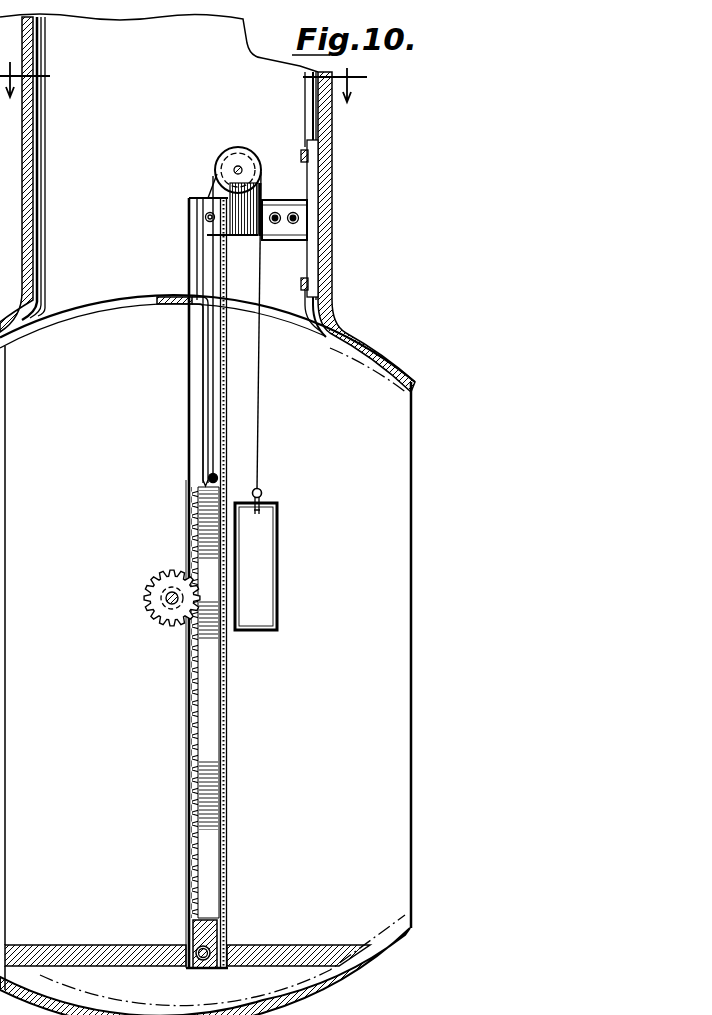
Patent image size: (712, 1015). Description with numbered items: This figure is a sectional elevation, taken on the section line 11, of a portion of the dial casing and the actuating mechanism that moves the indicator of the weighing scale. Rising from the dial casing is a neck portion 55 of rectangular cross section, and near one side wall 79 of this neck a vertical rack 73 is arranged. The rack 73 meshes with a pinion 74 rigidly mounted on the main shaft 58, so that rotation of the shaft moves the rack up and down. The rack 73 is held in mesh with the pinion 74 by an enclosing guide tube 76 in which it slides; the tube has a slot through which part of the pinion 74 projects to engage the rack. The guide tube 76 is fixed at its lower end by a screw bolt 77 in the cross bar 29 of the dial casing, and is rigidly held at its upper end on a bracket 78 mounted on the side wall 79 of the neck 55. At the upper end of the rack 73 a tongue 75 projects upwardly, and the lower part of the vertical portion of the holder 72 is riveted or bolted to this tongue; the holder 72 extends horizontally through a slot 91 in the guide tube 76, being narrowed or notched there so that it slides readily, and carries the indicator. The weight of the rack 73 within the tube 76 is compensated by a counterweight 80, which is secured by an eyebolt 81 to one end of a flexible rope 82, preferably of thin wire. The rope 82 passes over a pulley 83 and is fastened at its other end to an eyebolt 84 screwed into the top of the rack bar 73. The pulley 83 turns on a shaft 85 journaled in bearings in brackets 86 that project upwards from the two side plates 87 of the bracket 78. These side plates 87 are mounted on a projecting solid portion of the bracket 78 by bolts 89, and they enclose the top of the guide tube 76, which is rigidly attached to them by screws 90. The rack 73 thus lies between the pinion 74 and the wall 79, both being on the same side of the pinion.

The section line 11 is at (195, 82).
The cross bar 29 is at (115, 945).
The neck portion 55 is at (306, 113).
The main shaft 58 is at (167, 592).
The holder 72 is at (173, 294).
The rack 73 is at (211, 690).
The pinion 74 is at (169, 606).
The tongue 75 is at (200, 457).
The guide tube 76 is at (225, 754).
The screw bolt 77 is at (206, 951).
The bracket 78 is at (297, 214).
The side wall 79 is at (332, 270).
The counterweight 80 is at (257, 554).
The eyebolt 81 is at (263, 494).
The flexible rope 82 is at (259, 440).
The pulley 83 is at (216, 160).
The eyebolt 84 is at (219, 478).
The shaft 85 is at (240, 169).
The brackets 86 is at (262, 192).
The side plates 87 is at (246, 237).
The bolts 89 is at (276, 225).
The screws 90 is at (205, 218).
The slot 91 is at (190, 506).